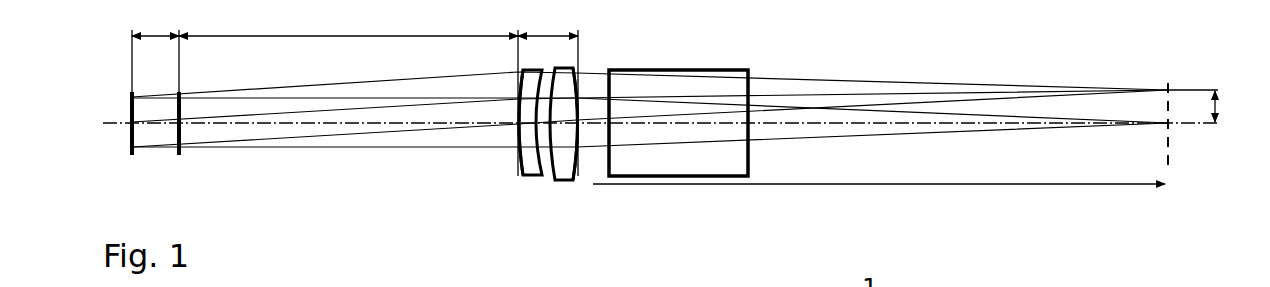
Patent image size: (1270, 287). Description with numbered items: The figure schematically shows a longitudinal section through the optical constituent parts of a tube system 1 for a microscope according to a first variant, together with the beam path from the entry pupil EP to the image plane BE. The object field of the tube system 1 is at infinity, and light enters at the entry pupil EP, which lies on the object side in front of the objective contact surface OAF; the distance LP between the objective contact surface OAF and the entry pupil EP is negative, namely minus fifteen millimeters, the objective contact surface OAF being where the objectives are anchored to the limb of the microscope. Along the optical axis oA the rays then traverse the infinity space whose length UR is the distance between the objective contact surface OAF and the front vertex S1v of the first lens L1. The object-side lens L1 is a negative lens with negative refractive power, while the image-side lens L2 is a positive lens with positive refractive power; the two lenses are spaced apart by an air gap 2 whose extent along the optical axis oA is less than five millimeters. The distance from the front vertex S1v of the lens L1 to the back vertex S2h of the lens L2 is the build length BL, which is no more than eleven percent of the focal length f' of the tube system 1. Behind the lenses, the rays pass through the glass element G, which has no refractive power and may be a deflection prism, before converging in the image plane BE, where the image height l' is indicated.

The tube system 1 is at (858, 52).
The air gap 2 is at (549, 123).
The entry pupil EP is at (132, 134).
The objective contact surface OAF is at (181, 133).
The front vertex S1v is at (518, 124).
The first tube lens L1 is at (532, 168).
The second tube lens L2 is at (565, 170).
The back vertex S2h is at (580, 124).
The glass element G is at (665, 84).
The image plane BE is at (1172, 140).
The optical axis oA is at (1208, 126).
The entry pupil position LP is at (155, 49).
The length of the infinity space UR is at (348, 21).
The build length BL is at (548, 91).
The focal length f' is at (879, 171).
The image height l' is at (1203, 106).